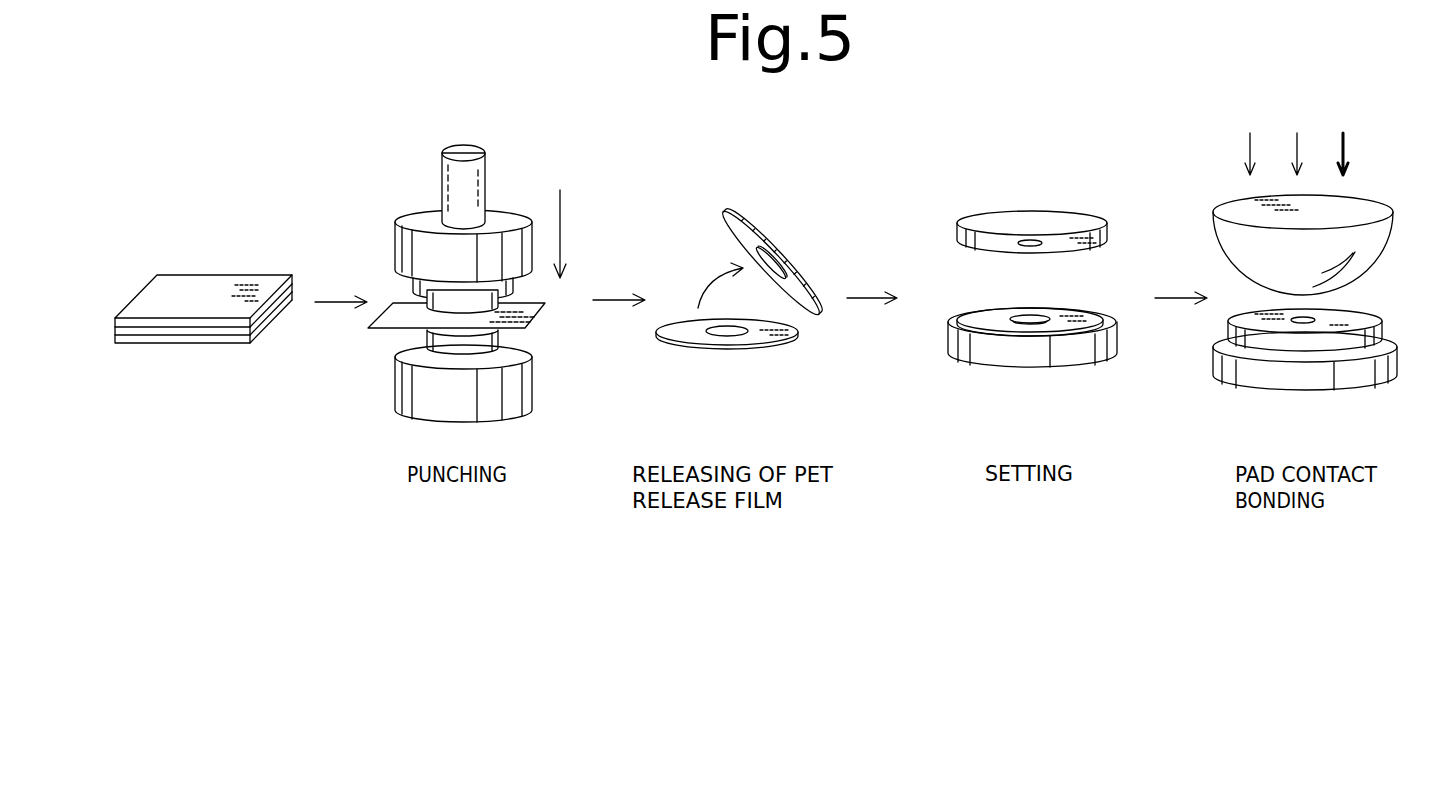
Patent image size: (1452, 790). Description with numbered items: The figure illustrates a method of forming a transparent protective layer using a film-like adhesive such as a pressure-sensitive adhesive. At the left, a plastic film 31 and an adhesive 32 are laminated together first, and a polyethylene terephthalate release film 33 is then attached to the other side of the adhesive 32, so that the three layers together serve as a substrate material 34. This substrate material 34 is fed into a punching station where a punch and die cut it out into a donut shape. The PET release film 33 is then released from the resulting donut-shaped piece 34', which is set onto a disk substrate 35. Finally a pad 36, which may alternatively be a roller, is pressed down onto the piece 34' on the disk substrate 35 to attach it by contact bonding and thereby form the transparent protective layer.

The plastic film 31 is at (183, 285).
The adhesive 32 is at (233, 332).
The PET release film 33 is at (150, 345).
The substrate material 34 is at (447, 355).
The punched-out substrate material 34' is at (875, 332).
The disk substrate 35 is at (1075, 218).
The pad 36 is at (1370, 236).